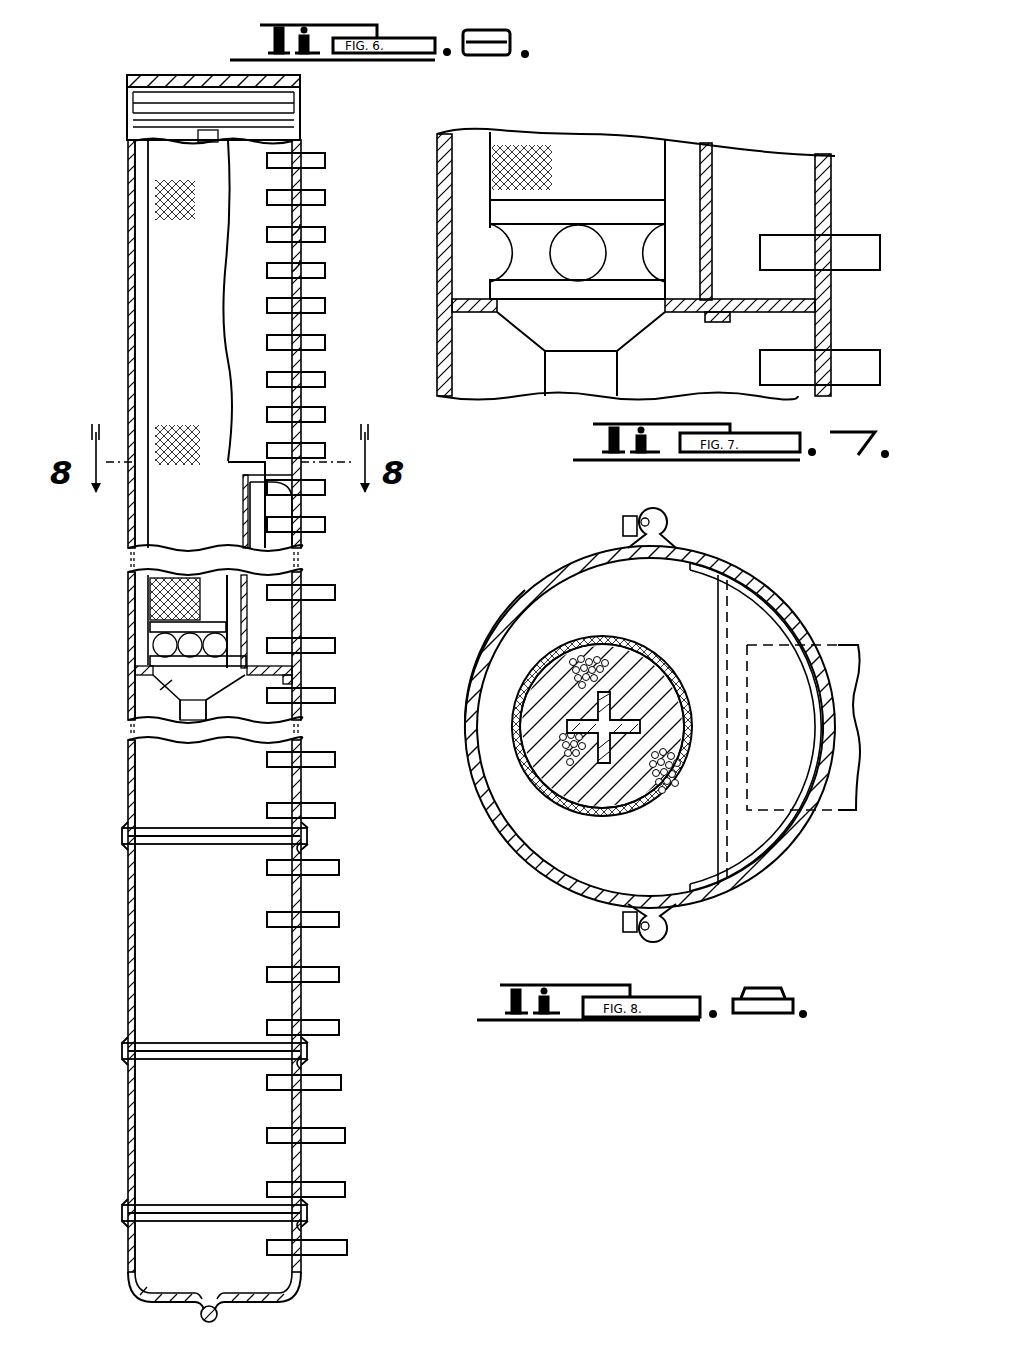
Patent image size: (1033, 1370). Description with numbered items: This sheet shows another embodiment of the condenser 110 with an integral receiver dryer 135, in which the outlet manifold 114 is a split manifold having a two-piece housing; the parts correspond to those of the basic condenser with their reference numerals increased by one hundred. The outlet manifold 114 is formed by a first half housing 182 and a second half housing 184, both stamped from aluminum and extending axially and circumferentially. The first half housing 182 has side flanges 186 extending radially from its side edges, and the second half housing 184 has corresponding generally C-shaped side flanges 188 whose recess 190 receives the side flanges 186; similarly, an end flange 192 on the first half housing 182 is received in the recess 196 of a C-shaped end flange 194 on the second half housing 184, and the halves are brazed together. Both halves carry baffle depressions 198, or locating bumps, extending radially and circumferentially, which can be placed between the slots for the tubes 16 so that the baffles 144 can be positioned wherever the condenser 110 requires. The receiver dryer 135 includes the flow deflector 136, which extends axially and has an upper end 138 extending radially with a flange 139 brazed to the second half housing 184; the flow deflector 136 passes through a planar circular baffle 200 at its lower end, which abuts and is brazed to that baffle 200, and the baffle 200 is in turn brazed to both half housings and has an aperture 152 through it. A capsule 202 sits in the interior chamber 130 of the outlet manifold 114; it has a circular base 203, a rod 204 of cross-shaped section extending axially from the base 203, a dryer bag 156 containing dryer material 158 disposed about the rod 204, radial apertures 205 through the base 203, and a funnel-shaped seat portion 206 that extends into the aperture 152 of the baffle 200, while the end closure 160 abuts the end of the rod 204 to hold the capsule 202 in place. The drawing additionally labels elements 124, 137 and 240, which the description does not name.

In FIG. 6, the tubes 16 is at (326, 160).
In FIG. 7, the tubes 16 is at (866, 358).
In FIG. 8, the tubes 16 is at (846, 645).
In FIG. 6, the condenser 110 is at (92, 100).
In FIG. 6, the outlet manifold 114 is at (126, 180).
In FIG. 7, the outlet manifold 114 is at (840, 184).
In FIG. 8, the outlet manifold 114 is at (751, 576).
In FIG. 6, the tube wall 124 is at (128, 246).
In FIG. 7, the tube wall 124 is at (823, 166).
In FIG. 6, the interior chamber 130 is at (248, 345).
In FIG. 6, the receiver dryer 135 is at (145, 320).
In FIG. 6, the flow deflector 136 is at (290, 546).
In FIG. 7, the flow deflector 136 is at (706, 172).
In FIG. 6, the fin joint 137 is at (301, 268).
In FIG. 6, the upper end 138 is at (292, 508).
In FIG. 6, the flange 139 is at (300, 470).
In FIG. 6, the baffles 144 is at (120, 836).
In FIG. 6, the aperture 152 is at (175, 685).
In FIG. 7, the aperture 152 is at (506, 312).
In FIG. 6, the dryer bag 156 is at (150, 603).
In FIG. 7, the dryer bag 156 is at (535, 162).
In FIG. 8, the dryer bag 156 is at (651, 660).
In FIG. 8, the dryer material 158 is at (580, 660).
In FIG. 6, the end closure 160 is at (170, 86).
In FIG. 8, the first half housing 182 is at (512, 616).
In FIG. 8, the second half housing 184 is at (775, 860).
In FIG. 8, the side flanges 186 is at (630, 535).
In FIG. 8, the C-shaped side flanges 188 is at (661, 526).
In FIG. 8, the recess 190 is at (640, 520).
In FIG. 6, the end flange 192 is at (200, 1310).
In FIG. 6, the C-shaped end flange 194 is at (228, 1305).
In FIG. 6, the recess 196 is at (217, 1320).
In FIG. 6, the baffle depressions 198 is at (305, 858).
In FIG. 6, the baffle 200 is at (292, 672).
In FIG. 7, the baffle 200 is at (736, 320).
In FIG. 6, the capsule 202 is at (150, 537).
In FIG. 7, the capsule 202 is at (672, 160).
In FIG. 8, the capsule 202 is at (545, 812).
In FIG. 6, the base 203 is at (152, 637).
In FIG. 7, the base 203 is at (502, 206).
In FIG. 8, the rod 204 is at (615, 746).
In FIG. 6, the apertures 205 is at (190, 652).
In FIG. 7, the apertures 205 is at (578, 252).
In FIG. 6, the seat portion 206 is at (158, 722).
In FIG. 7, the seat portion 206 is at (580, 366).
In FIG. 6, the notch 240 is at (292, 692).
In FIG. 7, the notch 240 is at (716, 312).